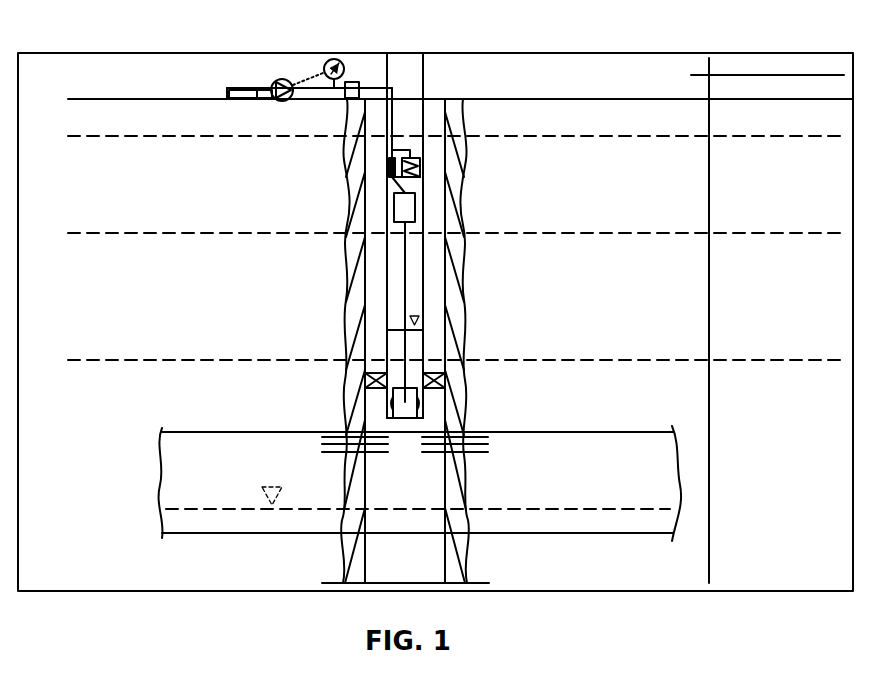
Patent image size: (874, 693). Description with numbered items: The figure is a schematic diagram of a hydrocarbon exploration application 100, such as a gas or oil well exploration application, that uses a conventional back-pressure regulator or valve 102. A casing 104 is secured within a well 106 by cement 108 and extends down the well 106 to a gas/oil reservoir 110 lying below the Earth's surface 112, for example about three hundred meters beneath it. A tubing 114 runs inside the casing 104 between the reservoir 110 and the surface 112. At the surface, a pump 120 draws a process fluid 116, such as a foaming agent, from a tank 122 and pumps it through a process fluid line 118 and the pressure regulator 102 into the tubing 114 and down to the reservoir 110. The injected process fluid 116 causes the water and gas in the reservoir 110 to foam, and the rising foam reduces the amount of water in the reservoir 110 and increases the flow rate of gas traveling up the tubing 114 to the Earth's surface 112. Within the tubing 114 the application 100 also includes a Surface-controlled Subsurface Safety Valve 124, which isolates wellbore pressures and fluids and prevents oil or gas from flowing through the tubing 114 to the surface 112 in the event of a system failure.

The hydrocarbon exploration application 100 is at (613, 45).
The back-pressure regulator 102 is at (420, 402).
The casing 104 is at (360, 282).
The well 106 is at (407, 256).
The cement 108 is at (352, 240).
The gas/oil reservoir 110 is at (198, 447).
The Earth's surface 112 is at (602, 99).
The tubing 114 is at (382, 263).
The process fluid 116 is at (231, 89).
The process fluid line 118 is at (418, 293).
The pump 120 is at (284, 79).
The tank 122 is at (217, 99).
The Surface-controlled Subsurface Safety Valve 124 is at (421, 168).